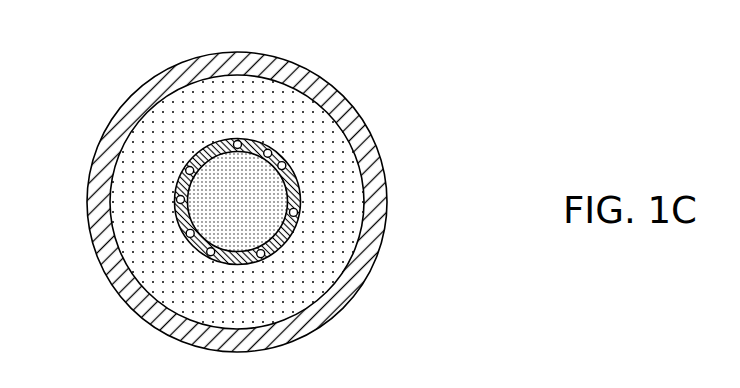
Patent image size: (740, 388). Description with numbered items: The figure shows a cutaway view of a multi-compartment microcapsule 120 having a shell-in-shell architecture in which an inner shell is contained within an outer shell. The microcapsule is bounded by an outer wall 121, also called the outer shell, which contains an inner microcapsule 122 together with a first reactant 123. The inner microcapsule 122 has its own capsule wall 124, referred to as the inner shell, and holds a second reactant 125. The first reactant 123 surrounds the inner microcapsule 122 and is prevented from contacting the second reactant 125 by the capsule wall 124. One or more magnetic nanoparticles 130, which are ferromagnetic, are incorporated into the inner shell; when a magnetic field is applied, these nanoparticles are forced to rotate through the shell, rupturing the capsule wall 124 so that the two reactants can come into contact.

The multi-compartment microcapsule 120 is at (367, 96).
The outer wall 121 is at (103, 170).
The inner microcapsule 122 is at (208, 138).
The first reactant 123 is at (305, 290).
The capsule wall 124 is at (298, 187).
The second reactant 125 is at (258, 208).
The magnetic nanoparticles 130 is at (188, 235).